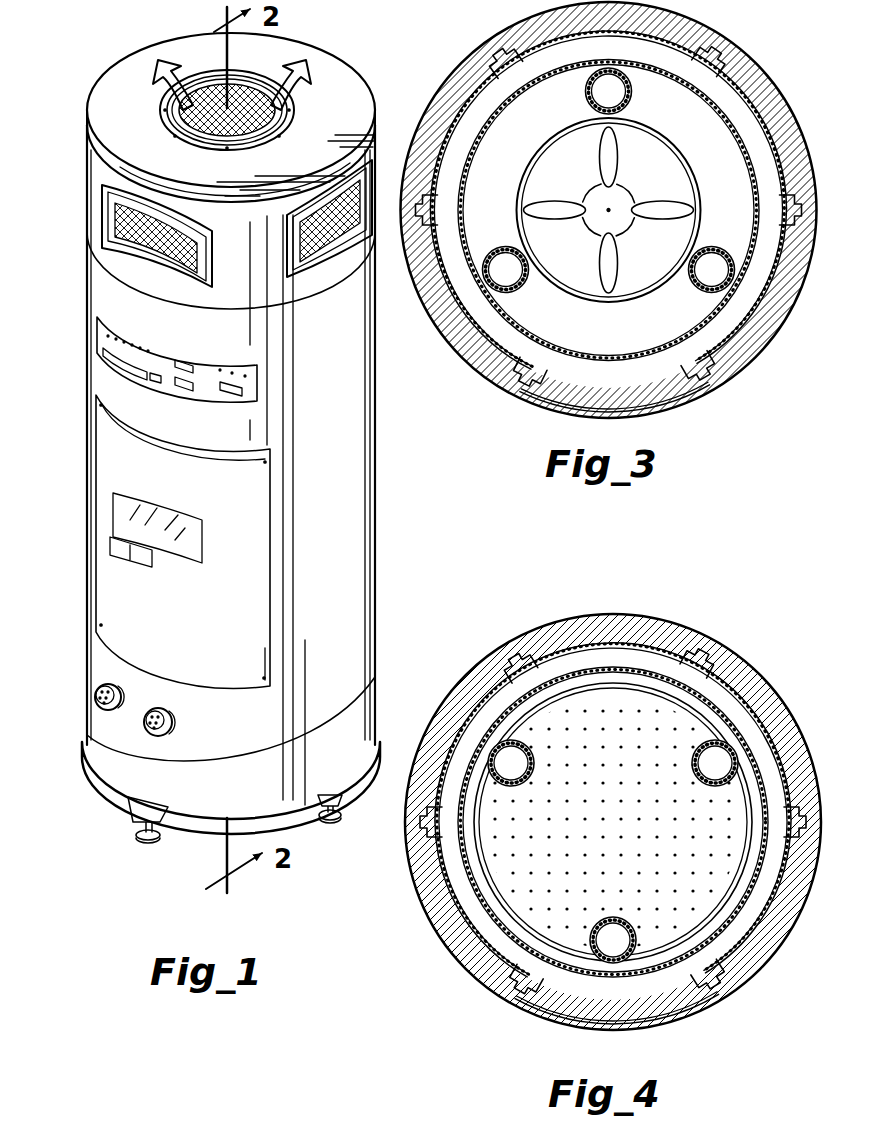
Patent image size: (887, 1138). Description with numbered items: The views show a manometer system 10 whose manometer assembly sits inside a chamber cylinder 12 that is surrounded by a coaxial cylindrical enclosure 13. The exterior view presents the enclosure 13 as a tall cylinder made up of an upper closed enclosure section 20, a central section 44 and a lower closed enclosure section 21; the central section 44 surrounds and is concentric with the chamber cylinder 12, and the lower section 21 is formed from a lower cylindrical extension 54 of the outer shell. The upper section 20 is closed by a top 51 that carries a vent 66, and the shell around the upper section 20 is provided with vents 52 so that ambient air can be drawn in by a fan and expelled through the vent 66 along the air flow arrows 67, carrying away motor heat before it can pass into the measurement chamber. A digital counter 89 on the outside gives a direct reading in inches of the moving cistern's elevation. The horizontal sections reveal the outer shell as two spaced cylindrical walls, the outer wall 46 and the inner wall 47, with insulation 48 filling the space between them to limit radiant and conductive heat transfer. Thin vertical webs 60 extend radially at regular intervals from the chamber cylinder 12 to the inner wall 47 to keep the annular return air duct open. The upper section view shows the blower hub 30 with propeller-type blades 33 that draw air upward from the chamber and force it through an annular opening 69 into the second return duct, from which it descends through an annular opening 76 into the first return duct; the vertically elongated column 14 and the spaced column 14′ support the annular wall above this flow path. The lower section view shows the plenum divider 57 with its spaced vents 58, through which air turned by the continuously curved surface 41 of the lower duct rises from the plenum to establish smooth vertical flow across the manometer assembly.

In FIG. 1, the manometer system 10 is at (66, 279).
In FIG. 3, the chamber cylinder 12 is at (716, 108).
In FIG. 4, the chamber cylinder 12 is at (490, 918).
In FIG. 1, the cylindrical enclosure 13 is at (88, 352).
In FIG. 3, the vertically elongated column 14 is at (735, 228).
In FIG. 4, the vertically elongated column 14 is at (695, 732).
In FIG. 3, the column 14′ is at (502, 255).
In FIG. 1, the upper closed enclosure section 20 is at (90, 164).
In FIG. 1, the lower closed enclosure section 21 is at (100, 728).
In FIG. 3, the hub 30 is at (598, 200).
In FIG. 3, the propeller-type blades 33 is at (620, 186).
In FIG. 4, the continuously curved surface 41 is at (505, 948).
In FIG. 1, the central section 44 is at (92, 434).
In FIG. 3, the cylindrical wall 46 is at (750, 78).
In FIG. 3, the inner wall 47 is at (755, 122).
In FIG. 4, the inner wall 47 is at (587, 990).
In FIG. 4, the insulation 48 is at (504, 978).
In FIG. 1, the top 51 is at (118, 98).
In FIG. 1, the vents 52 is at (118, 226).
In FIG. 4, the lower cylindrical extension 54 is at (445, 920).
In FIG. 4, the plenum divider 57 is at (660, 925).
In FIG. 4, the vents 58 is at (612, 695).
In FIG. 3, the thin vertical webs 60 is at (497, 76).
In FIG. 4, the thin vertical webs 60 is at (512, 688).
In FIG. 1, the vent 66 is at (245, 92).
In FIG. 1, the air flow arrows 67 is at (178, 58).
In FIG. 3, the annular opening 69 is at (627, 272).
In FIG. 3, the annular opening 76 is at (490, 327).
In FIG. 1, the digital counter 89 is at (246, 389).